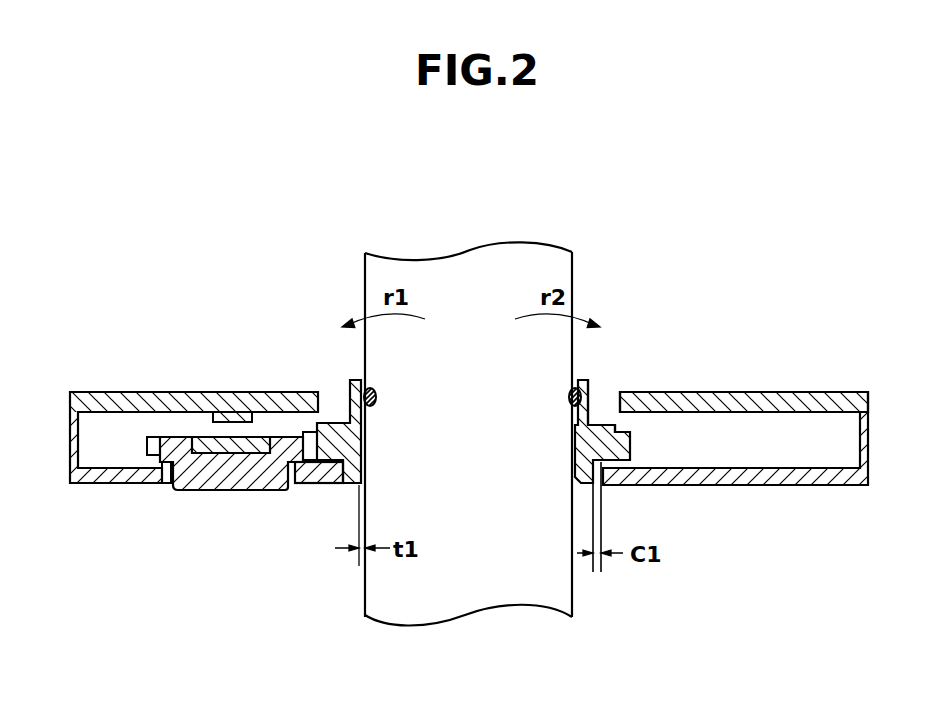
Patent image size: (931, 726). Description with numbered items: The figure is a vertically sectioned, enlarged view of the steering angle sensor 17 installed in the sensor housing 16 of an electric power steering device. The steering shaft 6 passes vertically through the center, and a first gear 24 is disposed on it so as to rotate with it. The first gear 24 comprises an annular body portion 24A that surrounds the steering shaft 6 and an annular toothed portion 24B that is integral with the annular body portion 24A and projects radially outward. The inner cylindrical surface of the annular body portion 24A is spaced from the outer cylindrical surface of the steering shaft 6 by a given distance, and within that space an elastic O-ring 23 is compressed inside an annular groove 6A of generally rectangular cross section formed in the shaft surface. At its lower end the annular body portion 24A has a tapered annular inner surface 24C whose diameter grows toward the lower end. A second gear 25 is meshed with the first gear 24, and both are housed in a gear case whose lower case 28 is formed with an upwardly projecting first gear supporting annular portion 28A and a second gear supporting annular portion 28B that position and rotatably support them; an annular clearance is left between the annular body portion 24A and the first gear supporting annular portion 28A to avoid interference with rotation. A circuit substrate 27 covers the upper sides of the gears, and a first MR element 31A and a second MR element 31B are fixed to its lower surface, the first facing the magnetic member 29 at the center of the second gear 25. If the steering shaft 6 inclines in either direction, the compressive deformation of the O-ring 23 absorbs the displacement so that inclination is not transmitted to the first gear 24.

The steering shaft 6 is at (497, 273).
The annular groove 6A is at (349, 386).
The sensor housing 16 is at (735, 452).
The steering angle sensor 17 is at (278, 383).
The elastic O-ring 23 is at (352, 380).
The first gear 24 is at (602, 472).
The annular body portion 24A is at (583, 378).
The annular toothed portion 24B is at (618, 425).
The tapered annular inner surface 24C is at (577, 483).
The second gear 25 is at (217, 475).
The circuit substrate 27 is at (772, 402).
The lower case 28 is at (735, 452).
The first gear supporting annular portion 28A is at (326, 473).
The second gear supporting annular portion 28B is at (167, 481).
The magnetic member 29 is at (218, 443).
The first MR element 31A is at (223, 414).
The second MR element 31B is at (171, 367).